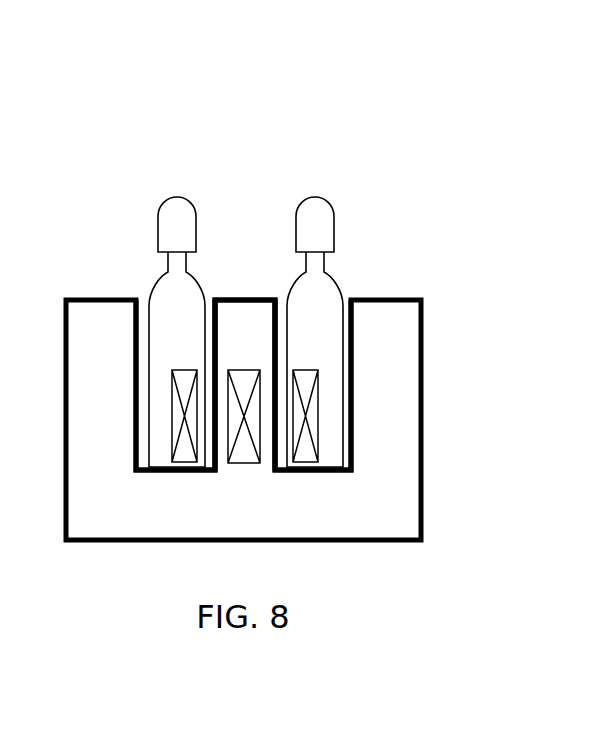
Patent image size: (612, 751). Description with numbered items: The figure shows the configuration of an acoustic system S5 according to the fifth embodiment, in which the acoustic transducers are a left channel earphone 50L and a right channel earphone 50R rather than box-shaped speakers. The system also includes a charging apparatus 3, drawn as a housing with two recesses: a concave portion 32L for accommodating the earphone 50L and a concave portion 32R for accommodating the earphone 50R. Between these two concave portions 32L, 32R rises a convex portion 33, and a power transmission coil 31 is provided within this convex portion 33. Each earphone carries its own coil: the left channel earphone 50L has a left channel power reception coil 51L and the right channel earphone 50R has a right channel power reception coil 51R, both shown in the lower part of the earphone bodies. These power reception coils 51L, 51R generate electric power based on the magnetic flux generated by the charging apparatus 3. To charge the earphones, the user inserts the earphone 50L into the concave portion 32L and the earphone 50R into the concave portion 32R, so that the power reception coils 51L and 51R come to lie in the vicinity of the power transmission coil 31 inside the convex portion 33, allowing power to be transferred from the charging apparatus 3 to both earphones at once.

The acoustic system S5 is at (252, 97).
The charging apparatus 3 is at (405, 380).
The convex portion 33 is at (243, 296).
The concave portion 32L is at (145, 298).
The concave portion 32R is at (347, 300).
The left channel earphone 50L is at (182, 197).
The right channel earphone 50R is at (315, 197).
The left channel power reception coil 51L is at (185, 462).
The power transmission coil 31 is at (245, 463).
The right channel power reception coil 51R is at (302, 470).